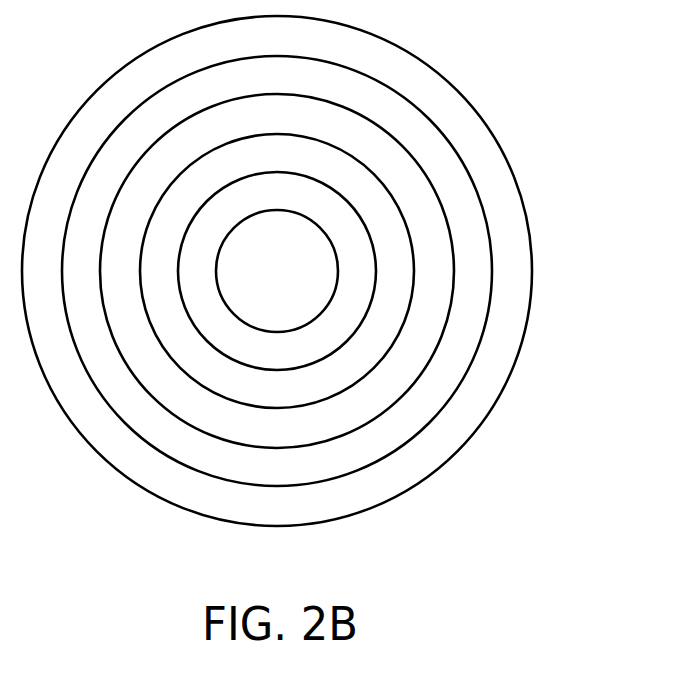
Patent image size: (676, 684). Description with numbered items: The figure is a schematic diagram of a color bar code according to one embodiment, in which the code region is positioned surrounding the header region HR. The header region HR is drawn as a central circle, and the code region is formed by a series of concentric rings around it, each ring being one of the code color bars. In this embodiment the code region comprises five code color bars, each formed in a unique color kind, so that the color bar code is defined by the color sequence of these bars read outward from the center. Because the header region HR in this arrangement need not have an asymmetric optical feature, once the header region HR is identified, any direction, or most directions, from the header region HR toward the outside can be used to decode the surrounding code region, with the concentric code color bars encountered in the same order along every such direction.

The header region HR is at (277, 271).